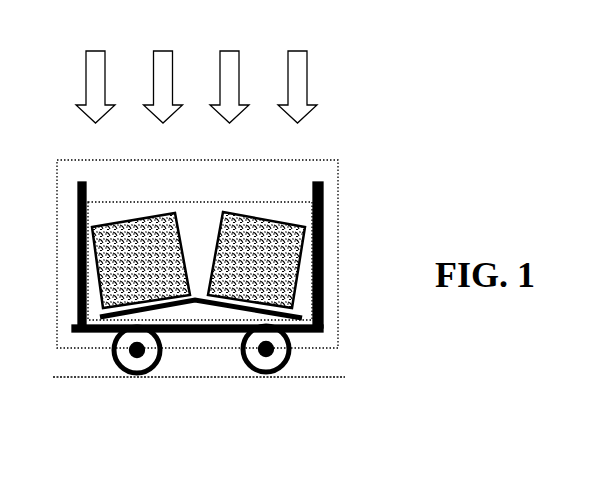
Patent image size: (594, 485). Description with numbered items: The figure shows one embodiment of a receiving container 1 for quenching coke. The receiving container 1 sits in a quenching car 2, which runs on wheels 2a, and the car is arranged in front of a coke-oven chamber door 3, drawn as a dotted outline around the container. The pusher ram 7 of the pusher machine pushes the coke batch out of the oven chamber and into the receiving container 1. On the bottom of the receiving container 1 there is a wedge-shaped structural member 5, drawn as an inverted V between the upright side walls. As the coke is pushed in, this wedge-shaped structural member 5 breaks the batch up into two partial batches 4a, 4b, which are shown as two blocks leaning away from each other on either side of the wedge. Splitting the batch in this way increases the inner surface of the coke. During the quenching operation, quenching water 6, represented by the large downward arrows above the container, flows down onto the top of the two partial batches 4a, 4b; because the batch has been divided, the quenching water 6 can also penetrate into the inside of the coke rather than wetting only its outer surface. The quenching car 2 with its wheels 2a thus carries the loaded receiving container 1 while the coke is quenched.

The receiving container 1 is at (78, 278).
The quenching car 2 is at (323, 331).
The wheels 2a is at (262, 376).
The coke-oven chamber door 3 is at (257, 162).
The partial batch 4a is at (268, 217).
The partial batch 4b is at (122, 218).
The wedge-shaped structural member 5 is at (197, 306).
The quenching water 6 is at (297, 78).
The pusher ram 7 is at (183, 203).